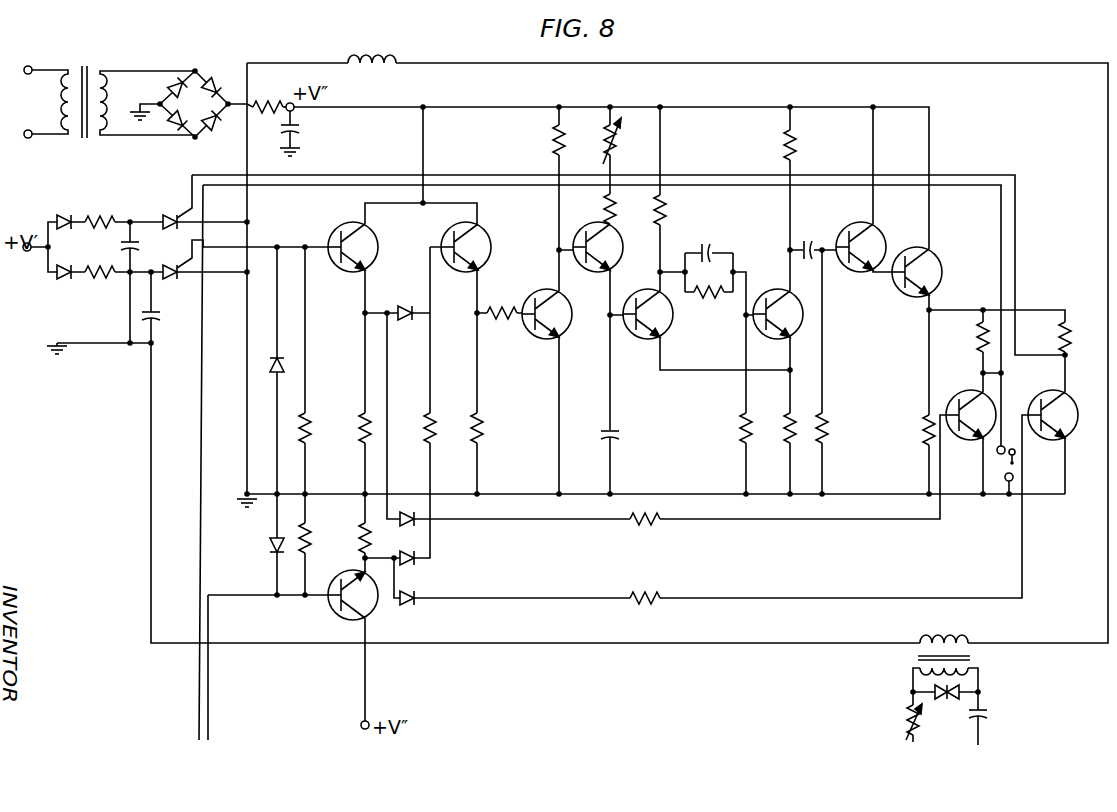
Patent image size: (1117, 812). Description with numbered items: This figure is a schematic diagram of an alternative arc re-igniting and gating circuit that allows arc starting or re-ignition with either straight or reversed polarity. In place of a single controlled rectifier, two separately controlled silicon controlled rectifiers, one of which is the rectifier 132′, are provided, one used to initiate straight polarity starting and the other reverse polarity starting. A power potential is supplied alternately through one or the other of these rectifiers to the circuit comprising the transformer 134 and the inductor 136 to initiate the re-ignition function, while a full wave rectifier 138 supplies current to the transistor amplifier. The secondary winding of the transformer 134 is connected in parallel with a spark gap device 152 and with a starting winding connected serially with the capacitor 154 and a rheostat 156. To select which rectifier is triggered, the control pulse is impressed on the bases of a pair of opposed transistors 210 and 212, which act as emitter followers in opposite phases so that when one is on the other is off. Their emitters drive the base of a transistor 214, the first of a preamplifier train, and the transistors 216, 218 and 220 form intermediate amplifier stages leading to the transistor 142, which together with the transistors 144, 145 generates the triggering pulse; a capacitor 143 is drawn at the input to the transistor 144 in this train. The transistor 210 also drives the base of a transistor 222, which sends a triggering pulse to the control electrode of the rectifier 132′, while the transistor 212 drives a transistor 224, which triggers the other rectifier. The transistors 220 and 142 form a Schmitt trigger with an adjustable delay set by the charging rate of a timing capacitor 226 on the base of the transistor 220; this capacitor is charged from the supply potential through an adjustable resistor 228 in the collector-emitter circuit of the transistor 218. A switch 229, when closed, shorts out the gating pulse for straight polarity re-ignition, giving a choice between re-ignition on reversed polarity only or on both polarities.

The inductor 136 is at (383, 62).
The full wave rectifier 138 is at (194, 104).
The silicon controlled rectifier 132′ is at (170, 282).
The transistor 210 is at (343, 228).
The transistor 212 is at (340, 620).
The transistor 214 is at (483, 238).
The transistor 216 is at (546, 338).
The transistor 218 is at (605, 258).
The transistor 220 is at (664, 330).
The transistor 222 is at (962, 392).
The transistor 224 is at (1066, 405).
The timing capacitor 226 is at (618, 432).
The adjustable resistor 228 is at (614, 152).
The switch 229 is at (1011, 440).
The transistor 142 is at (797, 325).
The capacitor 143 is at (812, 242).
The transistor 144 is at (875, 240).
The transistor 145 is at (938, 275).
The transformer 134 is at (972, 662).
The spark gap device 152 is at (947, 695).
The capacitor 154 is at (990, 718).
The rheostat 156 is at (905, 717).